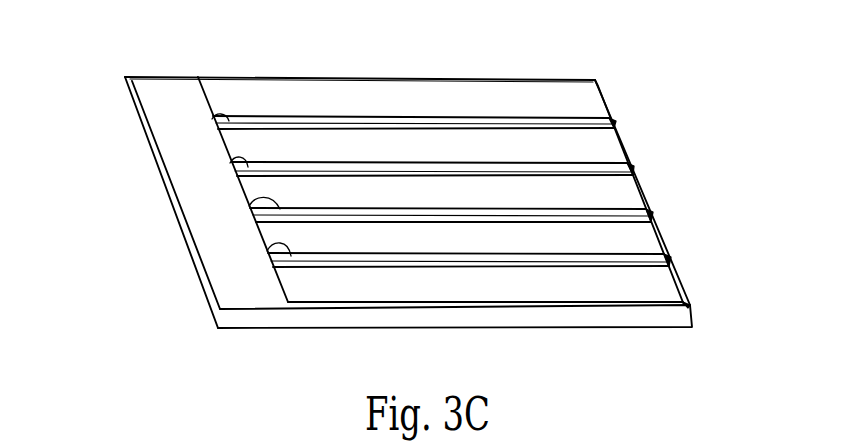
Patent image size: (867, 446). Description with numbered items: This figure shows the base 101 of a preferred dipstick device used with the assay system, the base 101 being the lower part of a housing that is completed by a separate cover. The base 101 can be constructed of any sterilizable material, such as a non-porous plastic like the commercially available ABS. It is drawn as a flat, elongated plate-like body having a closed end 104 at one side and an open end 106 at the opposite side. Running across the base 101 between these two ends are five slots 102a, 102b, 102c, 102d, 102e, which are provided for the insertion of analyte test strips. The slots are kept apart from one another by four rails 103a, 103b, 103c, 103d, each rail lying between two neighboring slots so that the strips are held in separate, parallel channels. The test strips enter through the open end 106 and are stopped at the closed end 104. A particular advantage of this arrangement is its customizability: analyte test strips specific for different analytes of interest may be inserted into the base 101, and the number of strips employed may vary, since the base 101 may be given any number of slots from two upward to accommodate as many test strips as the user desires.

The base 101 is at (146, 212).
The slot 102a is at (560, 93).
The slot 102b is at (598, 156).
The slot 102c is at (613, 195).
The slot 102d is at (628, 243).
The slot 102e is at (648, 288).
The rail 103a is at (212, 119).
The rail 103b is at (230, 163).
The rail 103c is at (249, 206).
The rail 103d is at (267, 251).
The closed end 104 is at (229, 200).
The open end 106 is at (605, 98).